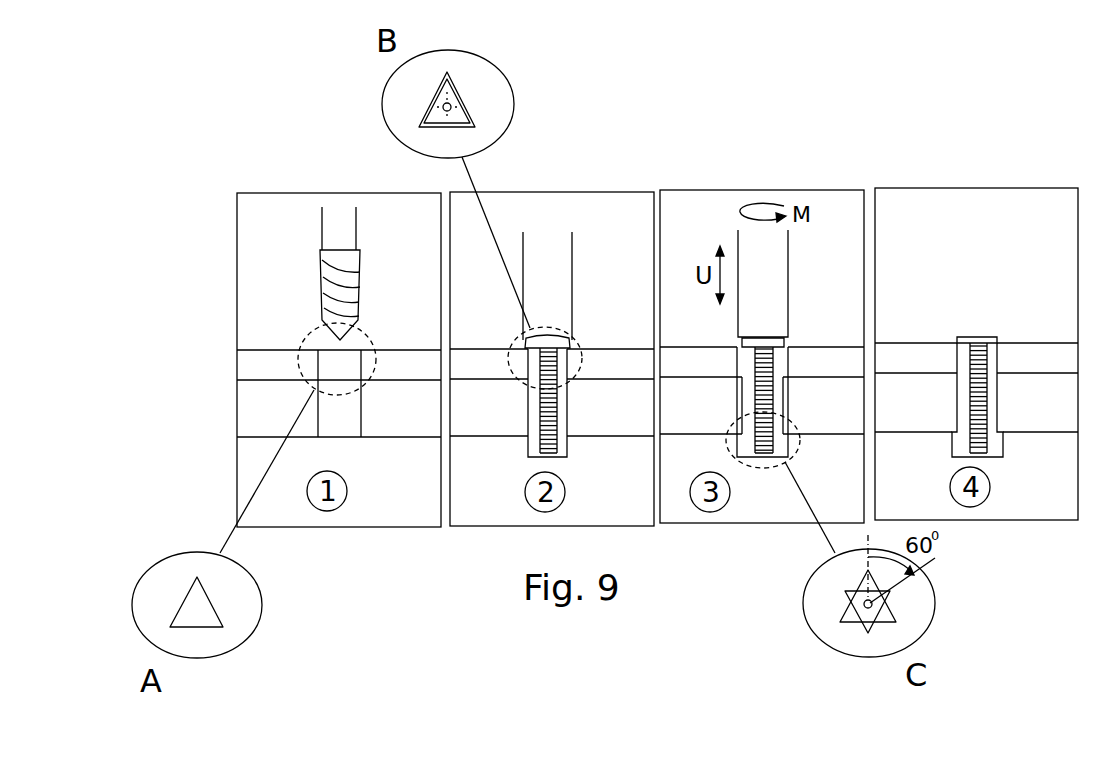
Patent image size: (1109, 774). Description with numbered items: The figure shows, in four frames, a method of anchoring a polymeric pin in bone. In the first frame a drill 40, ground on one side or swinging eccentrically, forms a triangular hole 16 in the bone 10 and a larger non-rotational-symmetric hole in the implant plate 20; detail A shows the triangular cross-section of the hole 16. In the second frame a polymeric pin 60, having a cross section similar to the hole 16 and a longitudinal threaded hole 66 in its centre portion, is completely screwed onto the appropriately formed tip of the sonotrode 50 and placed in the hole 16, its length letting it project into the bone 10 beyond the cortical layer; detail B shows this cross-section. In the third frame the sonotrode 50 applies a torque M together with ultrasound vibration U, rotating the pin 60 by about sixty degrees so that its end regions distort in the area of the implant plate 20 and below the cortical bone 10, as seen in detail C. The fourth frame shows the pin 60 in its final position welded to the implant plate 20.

The bone 10 is at (253, 407).
The implant plate 20 is at (253, 361).
The triangular hole 16 is at (352, 418).
The drill 40 is at (335, 241).
The sonotrode 50 is at (563, 260).
The polymeric pin 60 is at (562, 448).
The threaded hole 66 is at (552, 425).